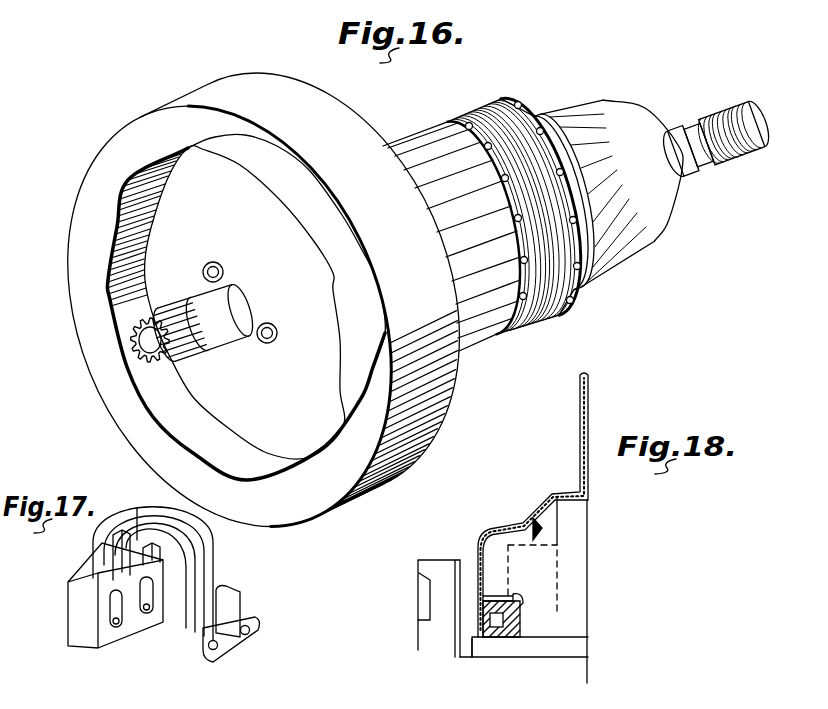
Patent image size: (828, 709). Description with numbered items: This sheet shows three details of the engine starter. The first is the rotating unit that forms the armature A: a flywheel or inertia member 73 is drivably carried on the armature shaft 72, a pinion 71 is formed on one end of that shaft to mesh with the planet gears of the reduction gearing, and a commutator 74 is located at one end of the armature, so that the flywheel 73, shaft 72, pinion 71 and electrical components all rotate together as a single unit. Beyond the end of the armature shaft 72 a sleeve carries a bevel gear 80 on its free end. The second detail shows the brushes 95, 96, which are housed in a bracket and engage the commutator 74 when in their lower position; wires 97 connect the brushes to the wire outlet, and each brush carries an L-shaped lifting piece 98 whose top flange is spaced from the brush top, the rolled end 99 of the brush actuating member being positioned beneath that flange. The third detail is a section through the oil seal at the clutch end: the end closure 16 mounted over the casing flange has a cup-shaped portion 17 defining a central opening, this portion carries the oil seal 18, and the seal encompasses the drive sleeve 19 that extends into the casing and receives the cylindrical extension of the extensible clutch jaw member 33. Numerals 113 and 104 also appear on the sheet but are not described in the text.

In FIG. 16, the pinion 71 is at (166, 308).
In FIG. 16, the armature shaft 72 is at (692, 130).
In FIG. 16, the flywheel 73 is at (272, 185).
In FIG. 16, the commutator 74 is at (650, 240).
In FIG. 16, the bevel gear 80 is at (757, 146).
In FIG. 16, the armature A is at (482, 224).
In FIG. 17, the brush 95 is at (103, 647).
In FIG. 17, the brush 96 is at (152, 620).
In FIG. 17, the wires 97 is at (213, 558).
In FIG. 17, the L-shaped lifting piece 98 is at (137, 508).
In FIG. 17, the rolled end 99 is at (93, 556).
In FIG. 18, the end closure 16 is at (528, 518).
In FIG. 18, the cup-shaped portion 17 is at (513, 600).
In FIG. 18, the oil seal 18 is at (513, 638).
In FIG. 18, the drive sleeve 19 is at (498, 642).
In FIG. 18, the clutch jaw member 33 is at (425, 582).
In FIG. 17, the member 113 is at (208, 702).
In FIG. 17, the member 104 is at (290, 708).